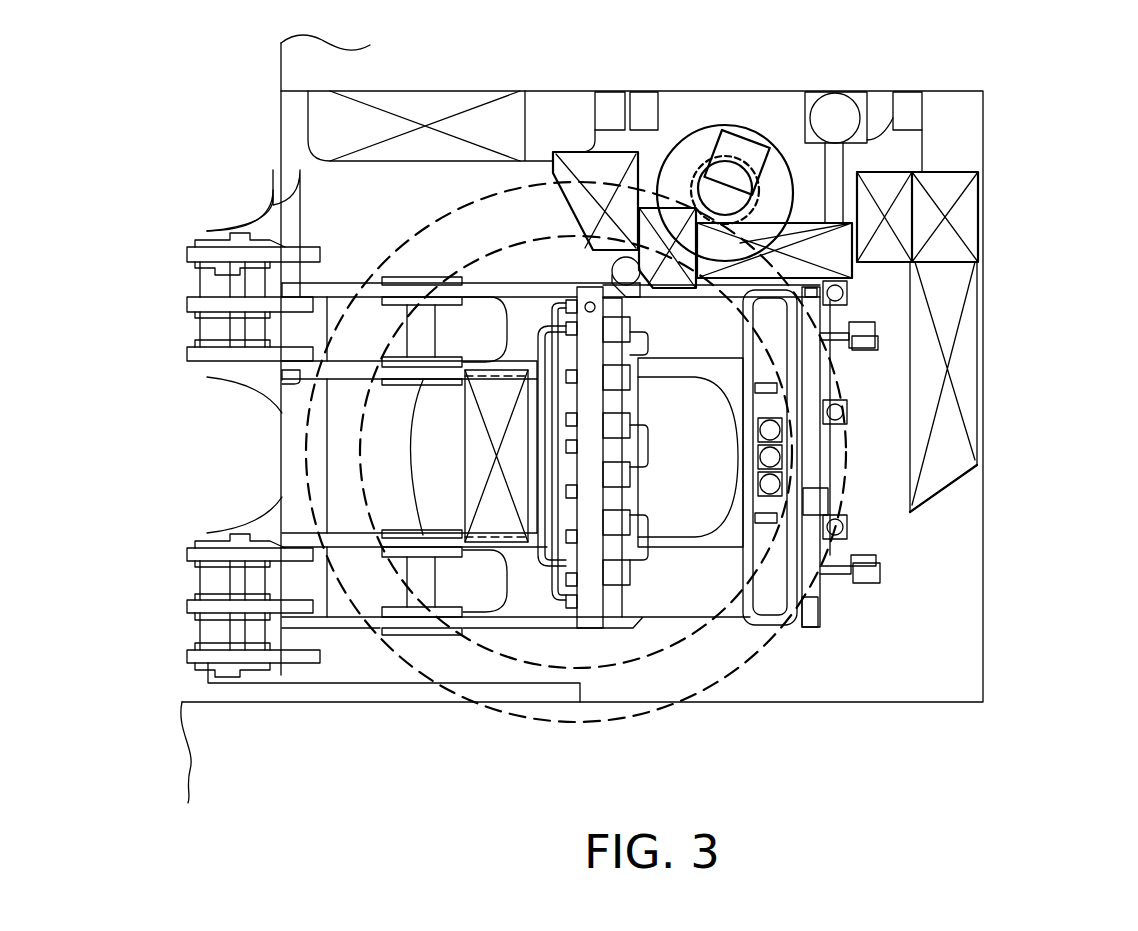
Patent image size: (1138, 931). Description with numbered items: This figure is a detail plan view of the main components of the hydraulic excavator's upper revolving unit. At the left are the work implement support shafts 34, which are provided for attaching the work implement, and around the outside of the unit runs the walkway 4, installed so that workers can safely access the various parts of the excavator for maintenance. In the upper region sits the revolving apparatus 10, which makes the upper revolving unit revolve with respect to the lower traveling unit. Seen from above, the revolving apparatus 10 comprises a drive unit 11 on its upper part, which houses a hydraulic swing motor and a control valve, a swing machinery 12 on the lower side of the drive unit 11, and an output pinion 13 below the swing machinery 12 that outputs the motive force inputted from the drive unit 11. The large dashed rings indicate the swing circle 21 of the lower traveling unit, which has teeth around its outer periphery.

The walkway 4 is at (857, 218).
The revolving apparatus 10 is at (762, 130).
The drive unit 11 is at (718, 183).
The swing machinery 12 is at (680, 167).
The output pinion 13 is at (705, 163).
The swing circle 21 is at (313, 493).
The work implement support shafts 34 is at (230, 325).